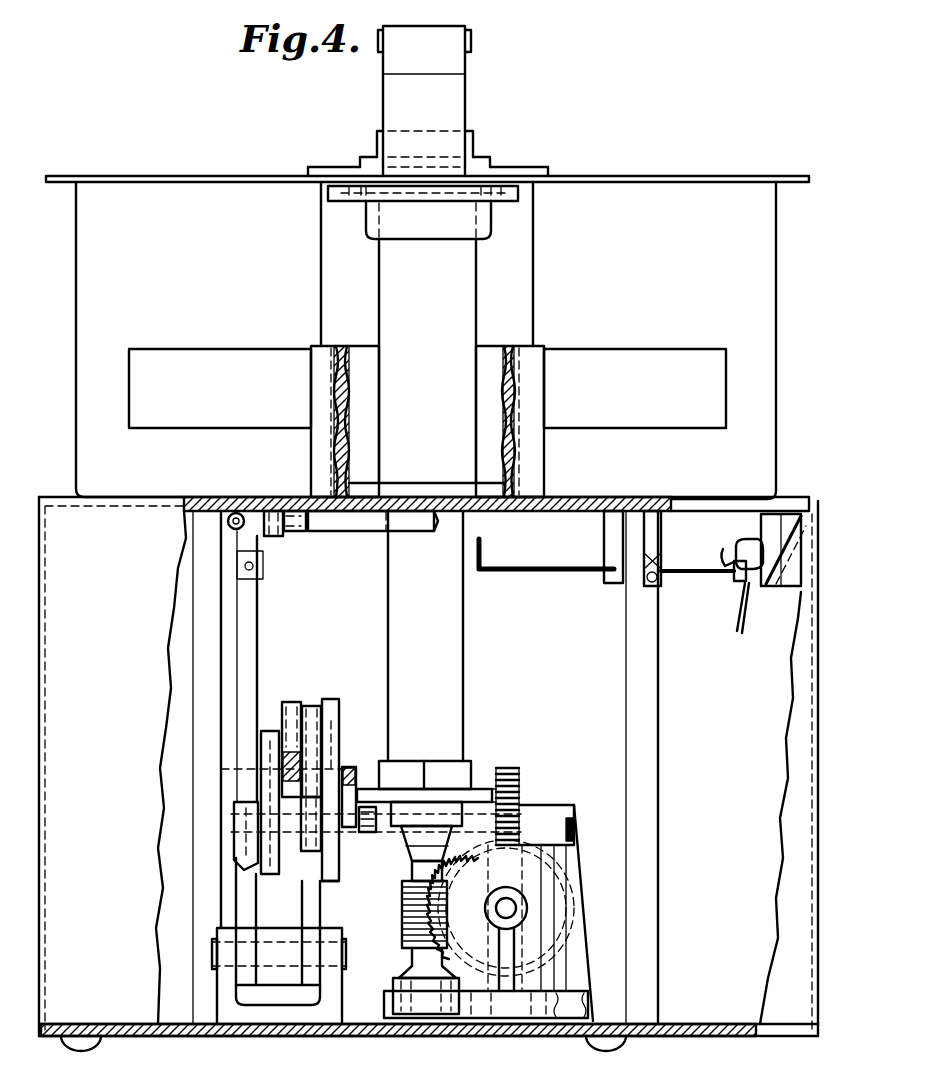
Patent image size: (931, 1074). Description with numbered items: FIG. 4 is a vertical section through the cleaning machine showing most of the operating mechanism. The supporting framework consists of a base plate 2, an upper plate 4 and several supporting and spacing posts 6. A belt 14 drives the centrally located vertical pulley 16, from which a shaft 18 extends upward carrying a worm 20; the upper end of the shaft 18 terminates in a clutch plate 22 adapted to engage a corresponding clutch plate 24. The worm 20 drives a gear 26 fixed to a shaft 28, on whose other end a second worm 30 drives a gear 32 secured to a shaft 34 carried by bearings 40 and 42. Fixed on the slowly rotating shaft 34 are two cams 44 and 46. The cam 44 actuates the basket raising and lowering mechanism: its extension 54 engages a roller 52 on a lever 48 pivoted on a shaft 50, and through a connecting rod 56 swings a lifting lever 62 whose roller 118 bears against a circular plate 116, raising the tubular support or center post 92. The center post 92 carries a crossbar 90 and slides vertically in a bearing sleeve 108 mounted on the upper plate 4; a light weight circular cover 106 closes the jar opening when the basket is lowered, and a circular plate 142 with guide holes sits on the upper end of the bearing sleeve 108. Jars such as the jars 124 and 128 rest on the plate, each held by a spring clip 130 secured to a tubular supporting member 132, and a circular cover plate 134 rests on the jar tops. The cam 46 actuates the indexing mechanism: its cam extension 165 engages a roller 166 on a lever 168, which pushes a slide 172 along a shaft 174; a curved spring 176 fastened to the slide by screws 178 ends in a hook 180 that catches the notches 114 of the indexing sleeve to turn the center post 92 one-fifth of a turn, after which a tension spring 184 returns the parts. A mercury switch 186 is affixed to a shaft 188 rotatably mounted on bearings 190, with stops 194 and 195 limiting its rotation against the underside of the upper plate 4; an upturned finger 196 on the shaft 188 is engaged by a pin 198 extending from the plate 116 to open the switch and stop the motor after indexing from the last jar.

The base plate 2 is at (215, 1023).
The upper plate 4 is at (775, 501).
The supporting and spacing posts 6 is at (193, 788).
The belt 14 is at (511, 1013).
The vertical pulley 16 is at (413, 989).
The shaft 18 is at (437, 948).
The worm 20 is at (404, 906).
The clutch plate 22 is at (406, 866).
The clutch plate 24 is at (436, 852).
The gear 26 is at (407, 953).
The shaft 28 is at (506, 900).
The second worm 30 is at (515, 888).
The gear 32 is at (518, 776).
The shaft 34 is at (396, 840).
The bearing 40 is at (561, 795).
The bearing 42 is at (233, 831).
The cam 44 is at (326, 865).
The cam 46 is at (260, 866).
The lever 48 is at (306, 705).
The shaft 50 is at (339, 946).
The roller 52 is at (331, 745).
The extension 54 is at (331, 703).
The connecting rod 56 is at (285, 700).
The lifting lever 62 is at (342, 760).
The crossbar 90 is at (459, 52).
The tubular support or center post 92 is at (457, 100).
The circular cover 106 is at (512, 160).
The bearing sleeve 108 is at (468, 276).
The notches 114 is at (433, 746).
The circular plate 116 is at (365, 782).
The roller 118 is at (359, 826).
The jar 124 is at (76, 308).
The jar 128 is at (753, 293).
The spring clip 130 is at (208, 348).
The tubular supporting member 132 is at (533, 443).
The circular cover plate 134 is at (673, 153).
The circular plate 142 is at (513, 187).
The cam extension 165 is at (260, 721).
The roller 166 is at (225, 763).
The lever 168 is at (251, 611).
The slide 172 is at (286, 525).
The shaft 174 is at (263, 529).
The curved spring 176 is at (363, 523).
The screws 178 is at (295, 521).
The hook 180 is at (427, 517).
The tension spring 184 is at (231, 491).
The mercury switch 186 is at (734, 529).
The shaft 188 is at (683, 567).
The bearings 190 is at (603, 567).
The stop 194 is at (759, 571).
The stop 195 is at (649, 553).
The upturned finger 196 is at (476, 545).
The pin 198 is at (500, 759).